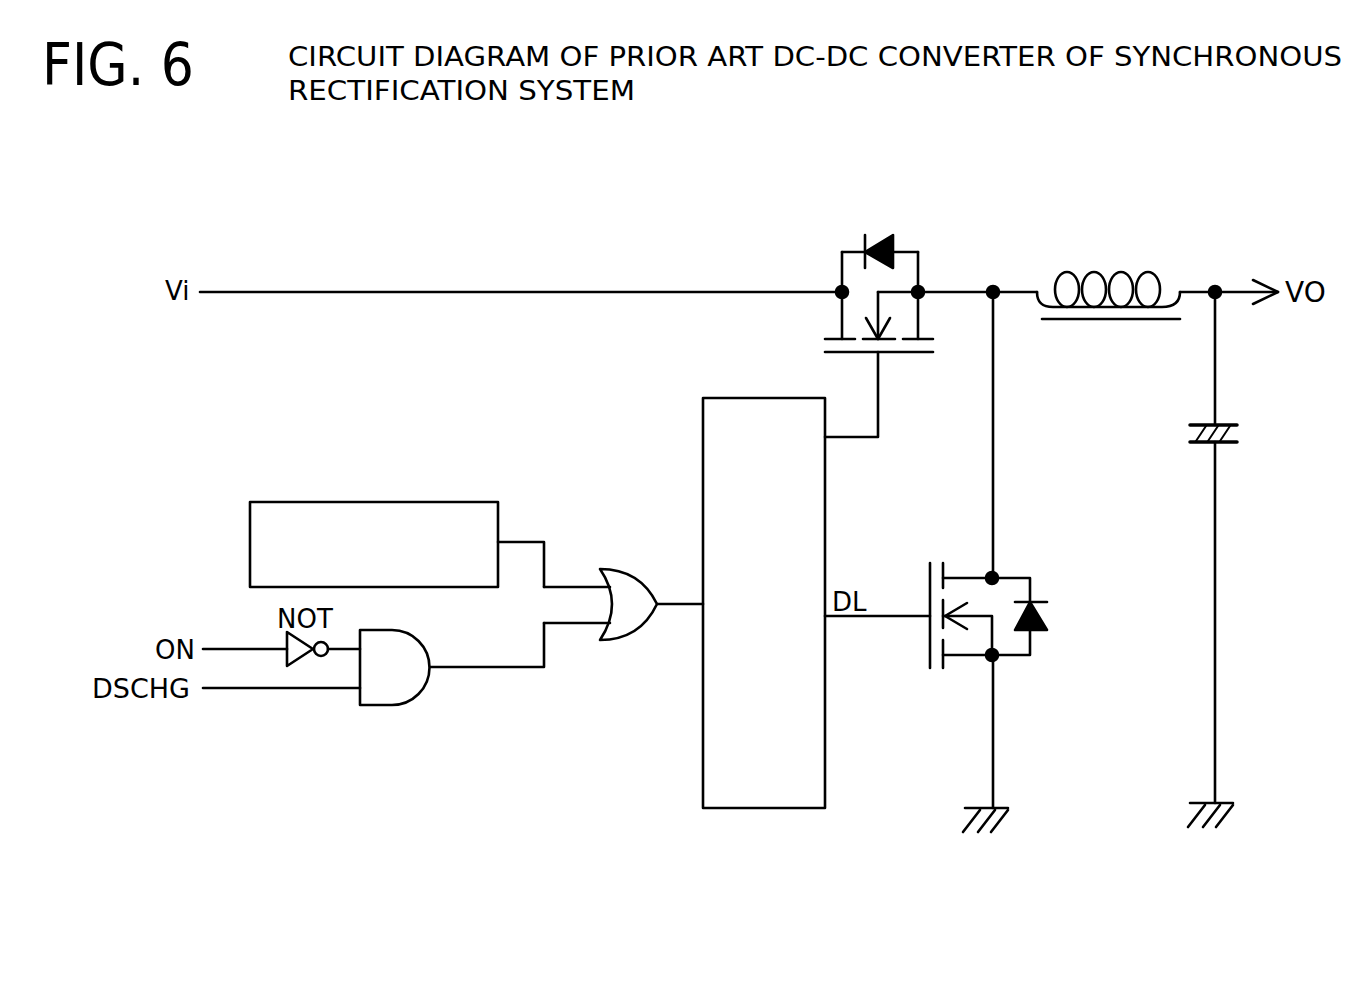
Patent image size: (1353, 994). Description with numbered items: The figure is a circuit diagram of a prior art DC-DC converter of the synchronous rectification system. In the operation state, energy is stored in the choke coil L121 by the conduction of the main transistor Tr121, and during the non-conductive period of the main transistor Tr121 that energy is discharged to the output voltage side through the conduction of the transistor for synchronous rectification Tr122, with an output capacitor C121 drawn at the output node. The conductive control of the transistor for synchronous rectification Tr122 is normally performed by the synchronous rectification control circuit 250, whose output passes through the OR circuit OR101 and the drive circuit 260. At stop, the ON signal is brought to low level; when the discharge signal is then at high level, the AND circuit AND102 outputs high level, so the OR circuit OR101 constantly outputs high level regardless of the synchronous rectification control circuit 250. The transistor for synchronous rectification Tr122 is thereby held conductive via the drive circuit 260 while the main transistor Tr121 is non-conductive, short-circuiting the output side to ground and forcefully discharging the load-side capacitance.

The main transistor Tr121 is at (832, 316).
The transistor for synchronous rectification Tr122 is at (950, 672).
The choke coil L121 is at (1082, 282).
The output capacitor C121 is at (1240, 433).
The synchronous rectification control circuit 250 is at (487, 505).
The drive circuit 260 is at (713, 773).
The OR circuit OR101 is at (623, 587).
The AND circuit AND102 is at (373, 685).